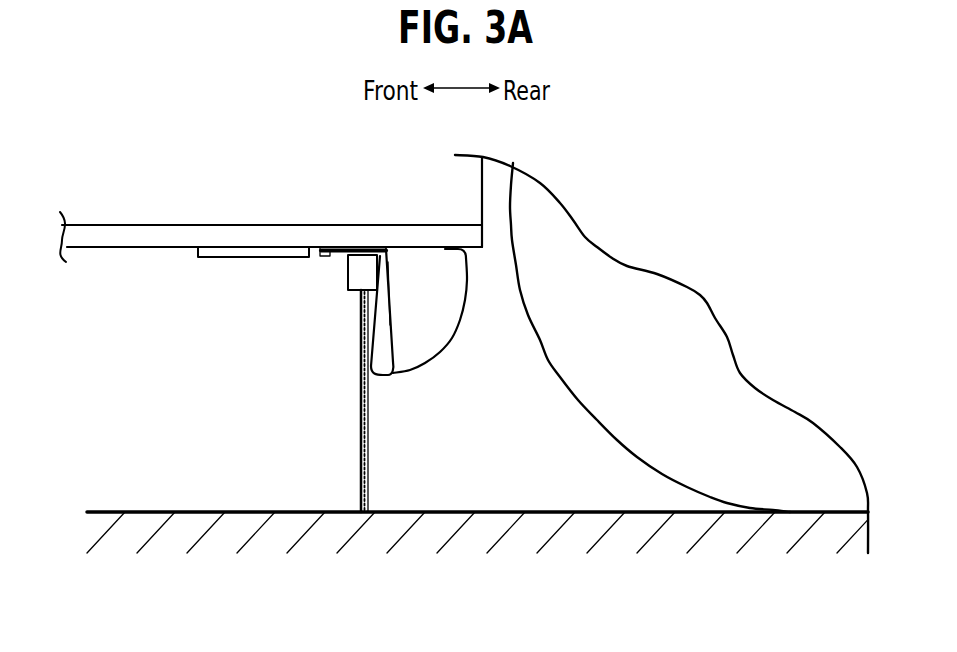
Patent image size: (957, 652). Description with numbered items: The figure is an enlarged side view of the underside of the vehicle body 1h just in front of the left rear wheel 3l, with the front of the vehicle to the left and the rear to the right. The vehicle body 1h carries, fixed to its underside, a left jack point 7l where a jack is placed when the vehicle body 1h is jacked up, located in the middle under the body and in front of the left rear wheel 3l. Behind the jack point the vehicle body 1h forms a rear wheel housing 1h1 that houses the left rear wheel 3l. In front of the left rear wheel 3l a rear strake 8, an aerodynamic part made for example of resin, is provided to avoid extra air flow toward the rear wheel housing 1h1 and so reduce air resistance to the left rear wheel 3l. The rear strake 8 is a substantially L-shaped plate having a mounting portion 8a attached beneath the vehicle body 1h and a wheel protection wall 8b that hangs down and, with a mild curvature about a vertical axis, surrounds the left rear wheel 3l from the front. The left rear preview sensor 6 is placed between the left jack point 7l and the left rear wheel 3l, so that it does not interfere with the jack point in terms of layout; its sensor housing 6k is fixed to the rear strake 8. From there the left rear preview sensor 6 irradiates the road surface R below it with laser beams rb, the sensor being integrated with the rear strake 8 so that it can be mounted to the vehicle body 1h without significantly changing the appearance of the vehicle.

The vehicle body 1h is at (118, 233).
The rear wheel housing 1h1 is at (492, 307).
The left rear wheel 3l is at (607, 408).
The left rear preview sensor 6 is at (342, 304).
The sensor housing 6k is at (347, 271).
The left jack point 7l is at (220, 259).
The rear strake 8 is at (400, 295).
The mounting portion 8a is at (333, 256).
The wheel protection wall 8b is at (373, 377).
The laser beams rb is at (359, 423).
The road surface R is at (457, 512).